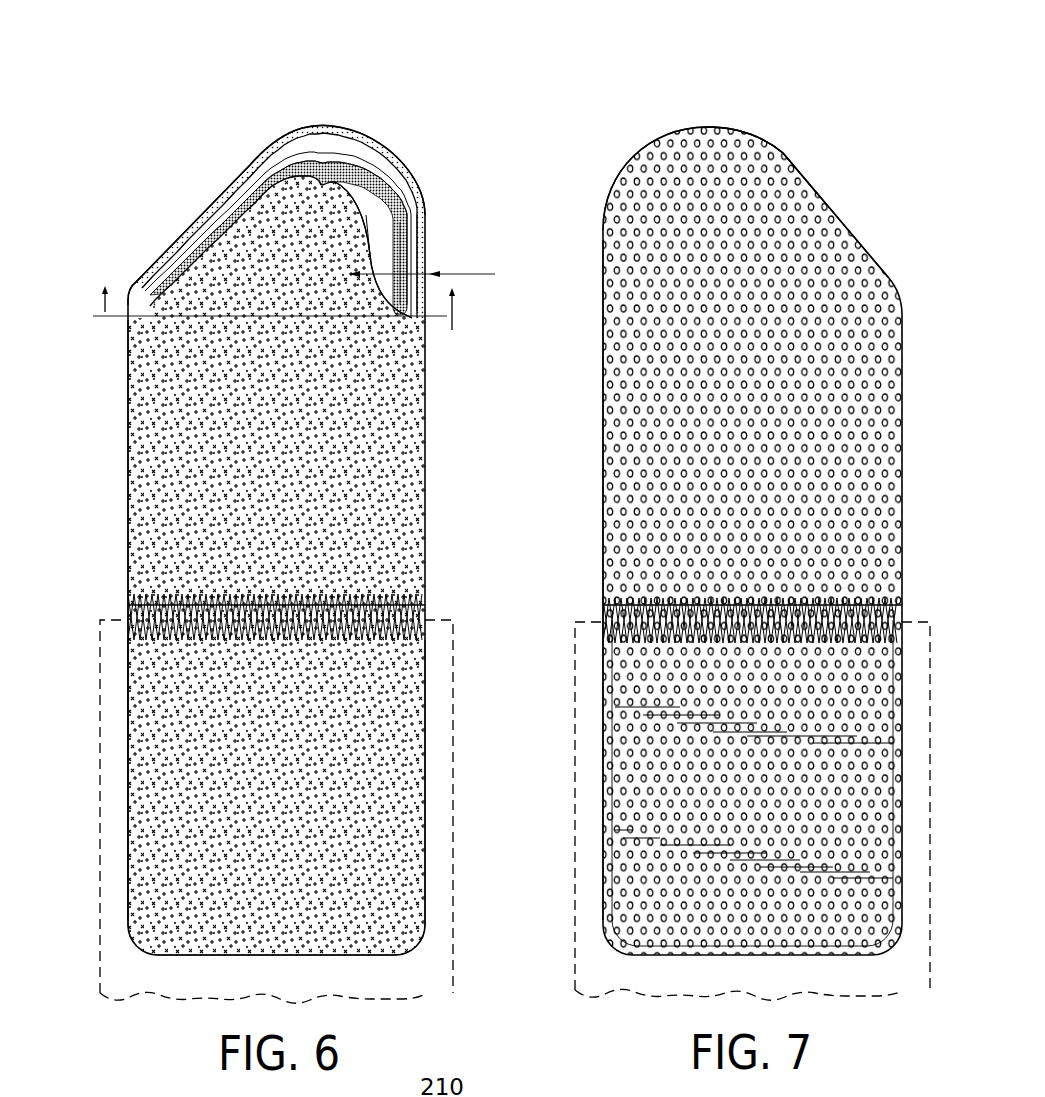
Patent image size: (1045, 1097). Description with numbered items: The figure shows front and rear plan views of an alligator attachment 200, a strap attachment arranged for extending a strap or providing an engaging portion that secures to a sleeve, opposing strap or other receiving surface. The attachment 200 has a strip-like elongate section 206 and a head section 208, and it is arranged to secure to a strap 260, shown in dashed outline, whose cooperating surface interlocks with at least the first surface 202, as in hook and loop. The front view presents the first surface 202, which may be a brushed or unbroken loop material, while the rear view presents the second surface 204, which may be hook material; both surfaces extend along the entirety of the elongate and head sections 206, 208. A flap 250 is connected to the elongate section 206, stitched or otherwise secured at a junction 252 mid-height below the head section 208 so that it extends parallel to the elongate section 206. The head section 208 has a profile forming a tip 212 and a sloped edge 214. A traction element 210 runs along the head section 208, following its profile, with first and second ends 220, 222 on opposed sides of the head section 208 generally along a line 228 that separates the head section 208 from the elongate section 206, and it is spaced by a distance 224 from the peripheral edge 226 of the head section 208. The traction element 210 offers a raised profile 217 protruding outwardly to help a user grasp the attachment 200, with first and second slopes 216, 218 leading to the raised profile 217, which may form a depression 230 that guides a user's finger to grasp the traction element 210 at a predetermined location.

In FIG. 6, the alligator attachment 200 is at (433, 186).
In FIG. 7, the alligator attachment 200 is at (826, 168).
In FIG. 6, the first surface 202 is at (300, 581).
In FIG. 7, the second surface 204 is at (772, 550).
In FIG. 6, the elongate section 206 is at (128, 495).
In FIG. 7, the elongate section 206 is at (603, 465).
In FIG. 6, the head section 208 is at (399, 140).
In FIG. 7, the head section 208 is at (790, 148).
In FIG. 6, the traction element 210 is at (349, 168).
In FIG. 6, the tip 212 is at (333, 130).
In FIG. 7, the tip 212 is at (708, 127).
In FIG. 6, the sloped edge 214 is at (205, 213).
In FIG. 7, the sloped edge 214 is at (862, 249).
In FIG. 6, the first slope 216 is at (303, 153).
In FIG. 6, the raised profile 217 is at (210, 210).
In FIG. 6, the second slope 218 is at (277, 193).
In FIG. 6, the first end 220 is at (142, 272).
In FIG. 6, the second end 222 is at (373, 317).
In FIG. 6, the distance 224 is at (417, 252).
In FIG. 6, the peripheral edge 226 is at (415, 173).
In FIG. 6, the line 228 is at (258, 321).
In FIG. 6, the depression 230 is at (357, 207).
In FIG. 6, the flap 250 is at (423, 903).
In FIG. 7, the flap 250 is at (603, 857).
In FIG. 6, the junction 252 is at (400, 632).
In FIG. 7, the junction 252 is at (603, 623).
In FIG. 6, the strap 260 is at (276, 811).
In FIG. 7, the strap 260 is at (575, 990).